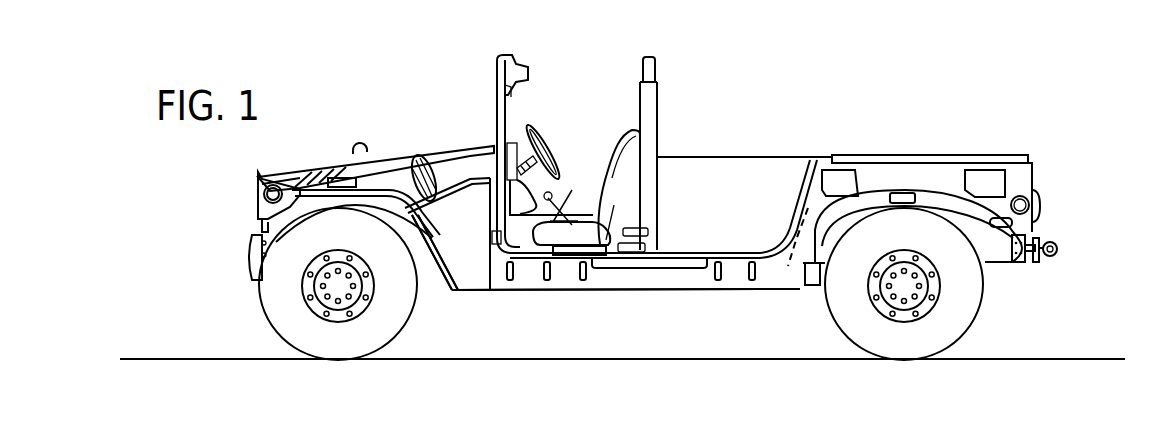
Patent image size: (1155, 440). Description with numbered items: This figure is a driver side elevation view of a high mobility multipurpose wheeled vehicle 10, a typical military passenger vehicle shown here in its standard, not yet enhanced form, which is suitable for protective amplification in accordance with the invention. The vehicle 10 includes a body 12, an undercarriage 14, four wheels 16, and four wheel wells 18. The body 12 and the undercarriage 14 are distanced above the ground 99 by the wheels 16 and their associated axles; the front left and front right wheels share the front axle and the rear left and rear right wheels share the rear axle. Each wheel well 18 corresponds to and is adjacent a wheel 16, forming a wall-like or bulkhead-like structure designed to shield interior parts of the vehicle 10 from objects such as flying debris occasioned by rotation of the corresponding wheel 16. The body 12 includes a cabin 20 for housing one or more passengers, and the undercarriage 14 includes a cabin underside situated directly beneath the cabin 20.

The high mobility multipurpose wheeled vehicle 10 is at (1010, 95).
The body 12 is at (720, 149).
The undercarriage 14 is at (668, 298).
The wheel 16 is at (258, 296).
The wheel well 18 is at (445, 276).
The cabin 20 is at (623, 76).
The ground 99 is at (453, 361).